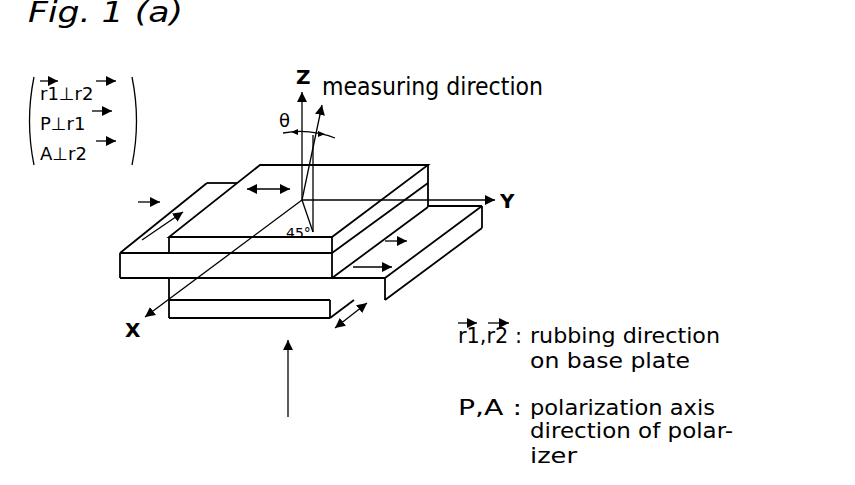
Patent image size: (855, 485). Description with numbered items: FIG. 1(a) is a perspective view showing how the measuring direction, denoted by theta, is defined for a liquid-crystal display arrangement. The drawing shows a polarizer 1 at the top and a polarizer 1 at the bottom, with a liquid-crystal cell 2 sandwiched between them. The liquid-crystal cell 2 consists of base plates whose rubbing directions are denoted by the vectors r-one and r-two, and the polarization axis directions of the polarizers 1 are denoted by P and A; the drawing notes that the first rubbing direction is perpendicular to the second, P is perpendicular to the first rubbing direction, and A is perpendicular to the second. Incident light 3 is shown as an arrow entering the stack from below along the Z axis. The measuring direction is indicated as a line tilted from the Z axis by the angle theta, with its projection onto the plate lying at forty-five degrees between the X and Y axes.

The polarizer 1 is at (417, 181).
The liquid-crystal cell 2 is at (93, 250).
The incident light 3 is at (300, 378).